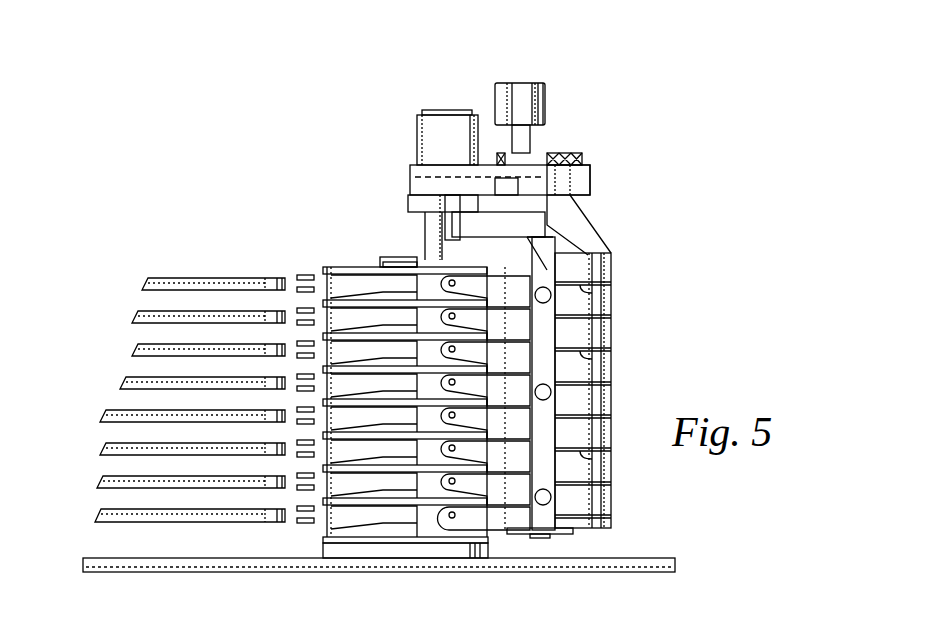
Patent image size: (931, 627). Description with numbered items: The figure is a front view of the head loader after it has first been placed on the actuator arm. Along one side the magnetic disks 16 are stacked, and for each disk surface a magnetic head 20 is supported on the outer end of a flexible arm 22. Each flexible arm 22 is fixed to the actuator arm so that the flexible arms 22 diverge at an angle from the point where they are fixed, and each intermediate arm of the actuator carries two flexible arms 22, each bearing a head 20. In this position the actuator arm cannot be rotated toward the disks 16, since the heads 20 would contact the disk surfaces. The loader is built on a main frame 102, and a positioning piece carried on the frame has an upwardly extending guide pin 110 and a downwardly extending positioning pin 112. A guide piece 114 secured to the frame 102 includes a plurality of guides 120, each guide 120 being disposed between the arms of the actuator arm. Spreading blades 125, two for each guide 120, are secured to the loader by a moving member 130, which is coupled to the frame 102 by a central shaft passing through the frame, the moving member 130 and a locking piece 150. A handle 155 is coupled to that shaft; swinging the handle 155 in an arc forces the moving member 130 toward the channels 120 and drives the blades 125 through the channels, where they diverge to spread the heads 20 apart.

The disk 16 is at (153, 280).
The magnetic head 20 is at (305, 273).
The flexible arm 22 is at (342, 268).
The main frame 102 is at (543, 250).
The guide pin 110 is at (428, 218).
The positioning pin 112 is at (393, 278).
The guide piece 114 is at (543, 328).
The guide 120 is at (470, 590).
The spreading blade 125 is at (597, 290).
The moving member 130 is at (592, 222).
The locking piece 150 is at (408, 207).
The handle 155 is at (545, 92).